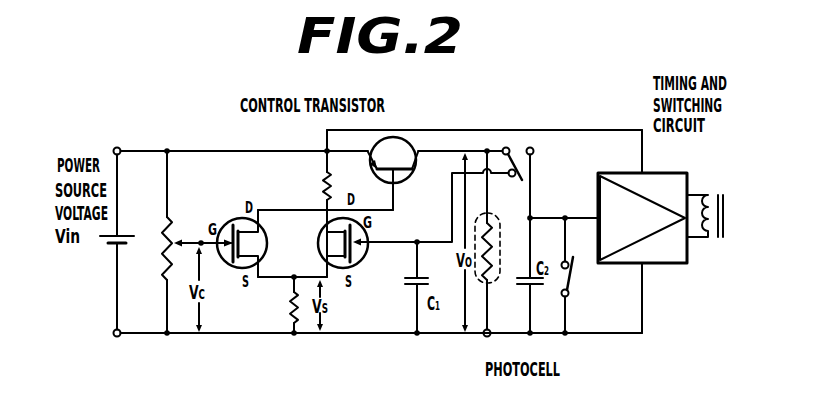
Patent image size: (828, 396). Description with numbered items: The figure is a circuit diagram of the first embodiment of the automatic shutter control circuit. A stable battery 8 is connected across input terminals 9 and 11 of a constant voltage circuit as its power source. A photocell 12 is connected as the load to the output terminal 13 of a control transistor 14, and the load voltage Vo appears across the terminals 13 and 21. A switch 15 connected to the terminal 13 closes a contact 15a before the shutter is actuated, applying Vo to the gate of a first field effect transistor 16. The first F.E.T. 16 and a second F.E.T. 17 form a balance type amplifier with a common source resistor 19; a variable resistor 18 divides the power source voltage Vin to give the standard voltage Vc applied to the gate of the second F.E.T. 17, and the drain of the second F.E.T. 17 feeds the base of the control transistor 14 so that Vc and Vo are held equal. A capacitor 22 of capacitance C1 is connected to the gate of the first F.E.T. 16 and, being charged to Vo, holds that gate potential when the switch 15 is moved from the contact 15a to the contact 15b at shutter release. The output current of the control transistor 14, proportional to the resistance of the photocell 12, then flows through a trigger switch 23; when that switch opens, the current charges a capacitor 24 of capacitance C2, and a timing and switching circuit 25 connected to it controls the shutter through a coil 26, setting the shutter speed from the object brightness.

The battery 8 is at (108, 243).
The input terminal 9 is at (119, 148).
The input terminal 11 is at (119, 337).
The photocell 12 is at (500, 264).
The output terminal 13 is at (486, 147).
The control transistor 14 is at (397, 137).
The switch 15 is at (511, 148).
The contact 15a is at (503, 188).
The contact 15b is at (534, 149).
The first field effect transistor 16 is at (359, 240).
The second field effect transistor 17 is at (225, 222).
The variable resistor 18 is at (166, 237).
The source resistor 19 is at (285, 307).
The terminal 21 is at (484, 337).
The capacitor 22 is at (404, 281).
The trigger switch 23 is at (570, 273).
The capacitor 24 is at (521, 286).
The timing and switching circuit 25 is at (662, 176).
The coil 26 is at (716, 216).